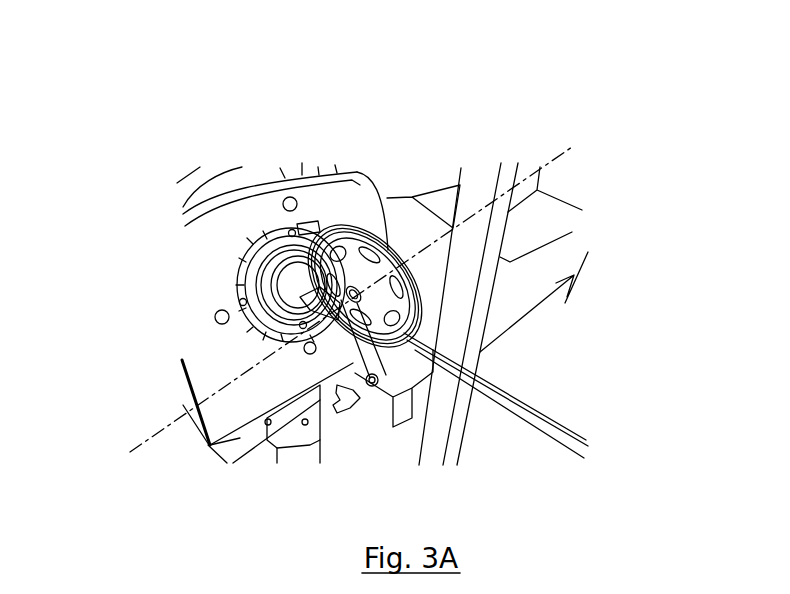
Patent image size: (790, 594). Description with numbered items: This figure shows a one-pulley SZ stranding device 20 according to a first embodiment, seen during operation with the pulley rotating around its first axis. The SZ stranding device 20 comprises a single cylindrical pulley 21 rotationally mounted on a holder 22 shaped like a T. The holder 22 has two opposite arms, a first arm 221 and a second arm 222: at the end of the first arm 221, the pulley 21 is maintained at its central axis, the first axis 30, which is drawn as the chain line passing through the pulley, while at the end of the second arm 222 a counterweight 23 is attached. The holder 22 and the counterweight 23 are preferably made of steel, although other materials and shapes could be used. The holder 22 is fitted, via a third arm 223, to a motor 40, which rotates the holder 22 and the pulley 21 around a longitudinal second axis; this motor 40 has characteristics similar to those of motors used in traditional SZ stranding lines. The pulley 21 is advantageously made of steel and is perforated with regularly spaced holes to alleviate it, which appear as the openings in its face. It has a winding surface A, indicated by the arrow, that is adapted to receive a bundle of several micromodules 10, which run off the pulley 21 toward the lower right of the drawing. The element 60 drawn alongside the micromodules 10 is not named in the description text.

The micromodules 10 is at (546, 414).
The SZ stranding device 20 is at (387, 198).
The pulley 21 is at (350, 222).
The holder 22 is at (285, 356).
The counterweight 23 is at (376, 400).
The first axis 30 is at (368, 292).
The motor 40 is at (243, 252).
The cable 60 is at (560, 440).
The first arm 221 is at (317, 280).
The second arm 222 is at (355, 363).
The third arm 223 is at (277, 240).
The winding surface A is at (410, 289).